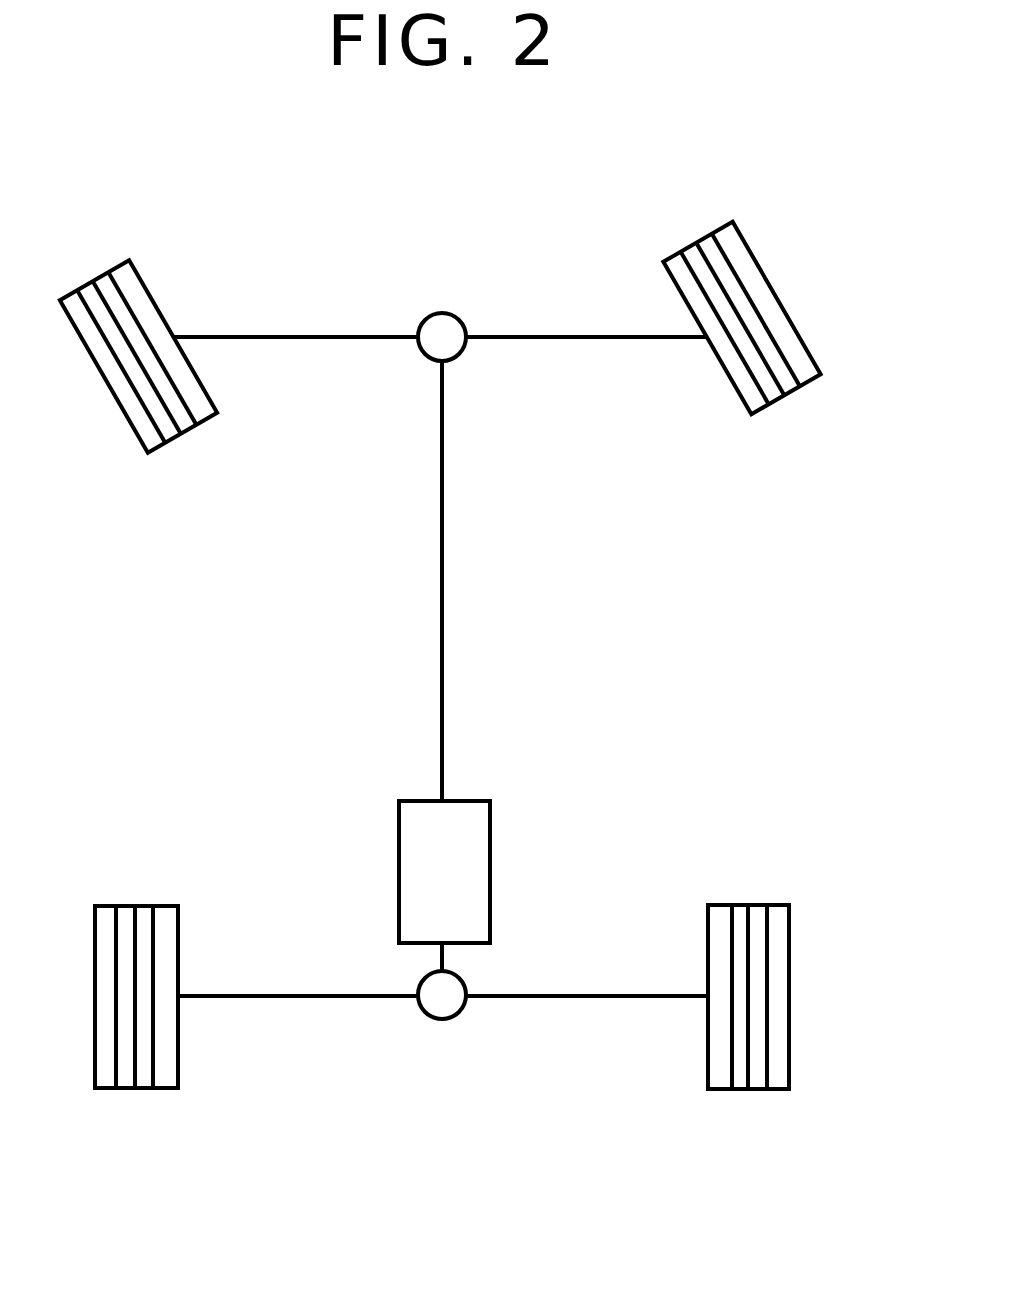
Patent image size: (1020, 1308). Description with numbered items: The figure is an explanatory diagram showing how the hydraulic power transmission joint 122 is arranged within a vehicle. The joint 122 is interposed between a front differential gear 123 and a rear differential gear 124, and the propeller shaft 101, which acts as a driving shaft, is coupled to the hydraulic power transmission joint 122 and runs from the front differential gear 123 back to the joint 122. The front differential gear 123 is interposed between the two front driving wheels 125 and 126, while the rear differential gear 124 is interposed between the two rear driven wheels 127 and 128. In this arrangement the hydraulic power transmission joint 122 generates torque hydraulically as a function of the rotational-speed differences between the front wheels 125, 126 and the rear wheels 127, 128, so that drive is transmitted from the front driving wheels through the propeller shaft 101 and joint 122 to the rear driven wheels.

The propeller shaft 101 is at (442, 508).
The hydraulic power transmission joint 122 is at (490, 893).
The front differential gear 123 is at (452, 357).
The rear differential gear 124 is at (452, 1015).
The front driving wheel 125 is at (133, 265).
The front driving wheel 126 is at (792, 328).
The rear driven wheel 127 is at (138, 1088).
The rear driven wheel 128 is at (737, 1089).